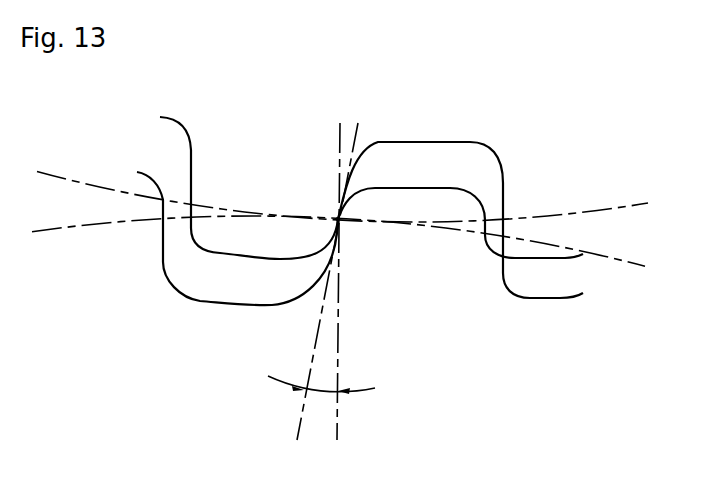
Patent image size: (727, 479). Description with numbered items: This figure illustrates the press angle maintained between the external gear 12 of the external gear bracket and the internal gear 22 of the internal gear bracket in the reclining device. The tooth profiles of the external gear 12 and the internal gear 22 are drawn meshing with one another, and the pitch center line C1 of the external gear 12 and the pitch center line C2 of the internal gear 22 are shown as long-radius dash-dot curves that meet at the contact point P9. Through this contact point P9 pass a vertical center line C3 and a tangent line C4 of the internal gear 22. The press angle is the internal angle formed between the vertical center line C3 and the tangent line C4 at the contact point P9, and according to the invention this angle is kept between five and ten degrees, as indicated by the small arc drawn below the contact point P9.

The external gear 12 is at (410, 188).
The internal gear 22 is at (218, 252).
The contact point P9 is at (338, 219).
The pitch center line of the external gear C1 is at (356, 250).
The pitch center line of the internal gear C2 is at (358, 196).
The vertical center line C3 is at (337, 295).
The tangent line of the internal gear C4 is at (318, 295).